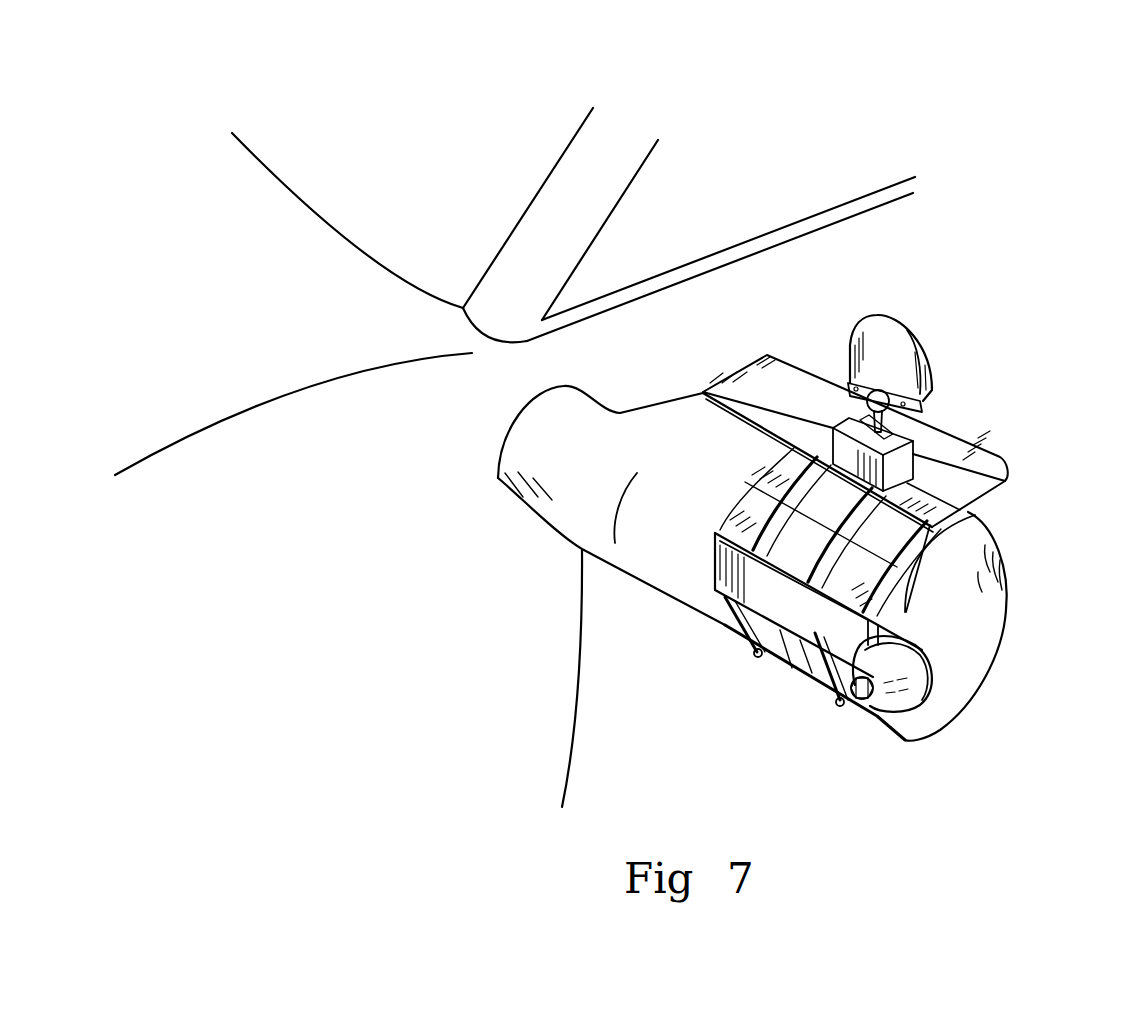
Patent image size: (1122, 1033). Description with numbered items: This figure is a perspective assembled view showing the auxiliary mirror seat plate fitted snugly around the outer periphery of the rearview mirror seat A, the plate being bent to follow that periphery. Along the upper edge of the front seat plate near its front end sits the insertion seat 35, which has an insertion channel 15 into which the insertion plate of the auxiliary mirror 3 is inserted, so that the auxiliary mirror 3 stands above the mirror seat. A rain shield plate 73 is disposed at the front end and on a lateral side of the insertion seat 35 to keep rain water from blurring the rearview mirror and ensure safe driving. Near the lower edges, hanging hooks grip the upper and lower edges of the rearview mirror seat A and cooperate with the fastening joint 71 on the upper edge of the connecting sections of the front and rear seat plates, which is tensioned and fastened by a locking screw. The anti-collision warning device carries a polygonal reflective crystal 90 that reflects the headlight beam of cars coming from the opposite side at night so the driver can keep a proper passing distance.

The auxiliary mirror 3 is at (882, 337).
The insertion channel 15 is at (895, 431).
The insertion seat 35 is at (897, 467).
The fastening joint 71 is at (754, 655).
The rain shield plate 73 is at (794, 379).
The polygonal reflective crystal 90 is at (860, 700).
The rearview mirror seat A is at (985, 645).